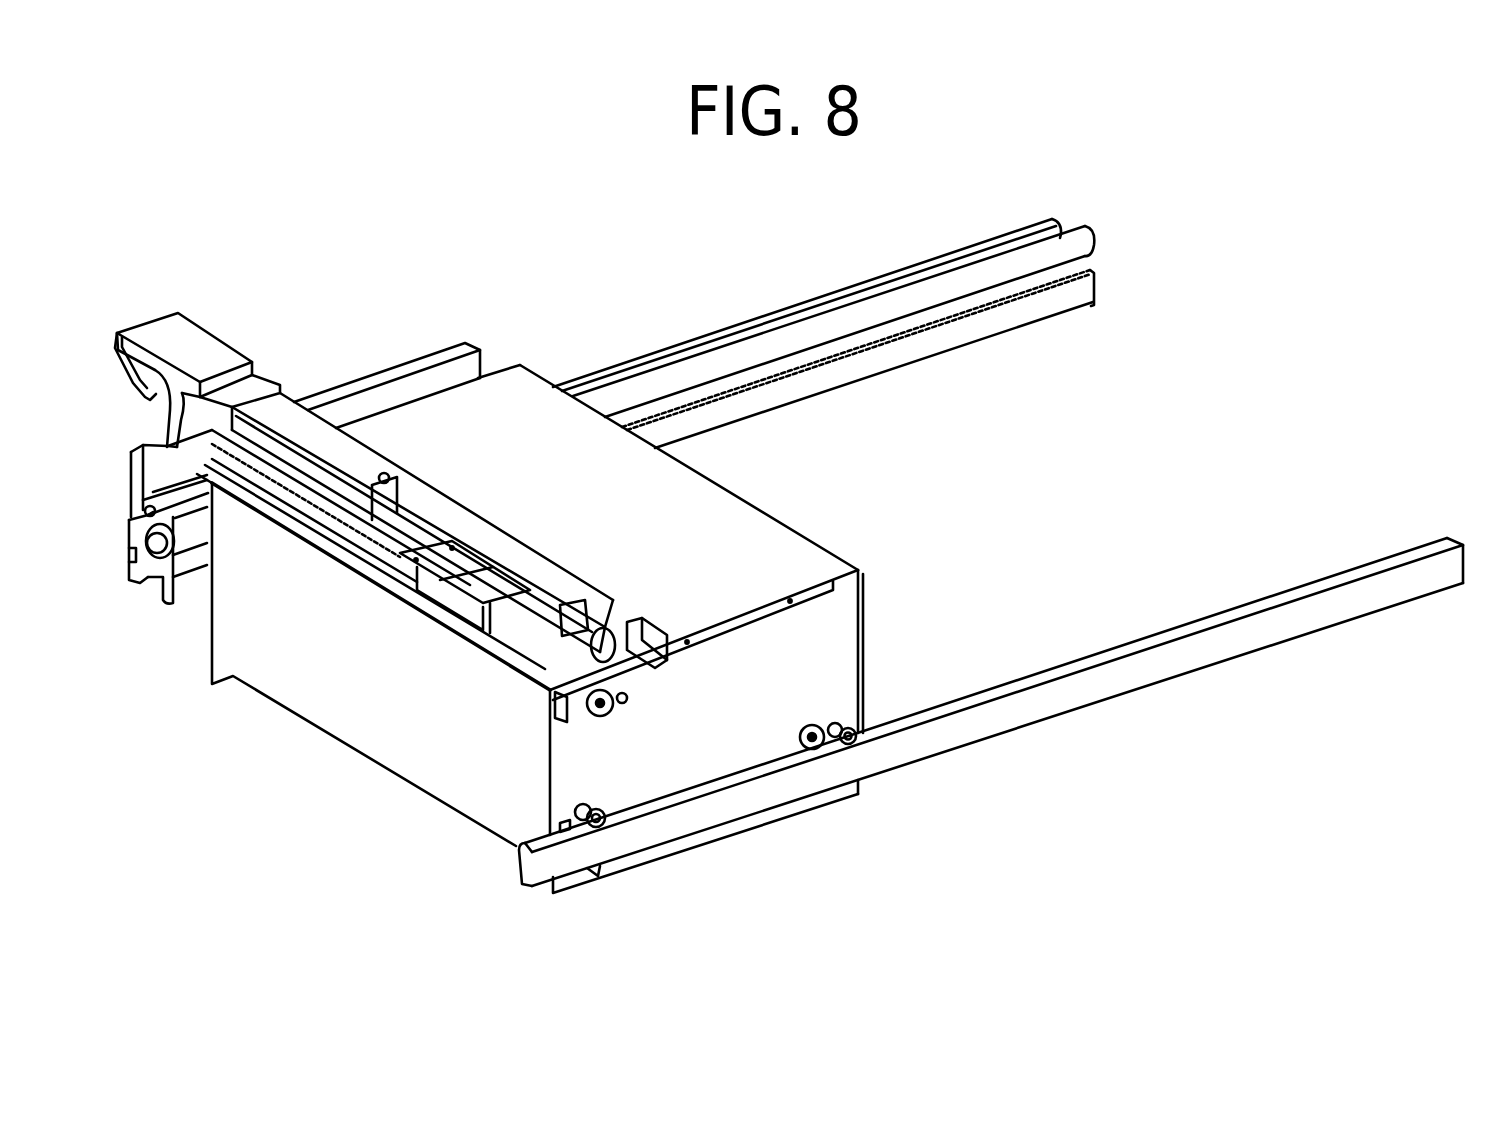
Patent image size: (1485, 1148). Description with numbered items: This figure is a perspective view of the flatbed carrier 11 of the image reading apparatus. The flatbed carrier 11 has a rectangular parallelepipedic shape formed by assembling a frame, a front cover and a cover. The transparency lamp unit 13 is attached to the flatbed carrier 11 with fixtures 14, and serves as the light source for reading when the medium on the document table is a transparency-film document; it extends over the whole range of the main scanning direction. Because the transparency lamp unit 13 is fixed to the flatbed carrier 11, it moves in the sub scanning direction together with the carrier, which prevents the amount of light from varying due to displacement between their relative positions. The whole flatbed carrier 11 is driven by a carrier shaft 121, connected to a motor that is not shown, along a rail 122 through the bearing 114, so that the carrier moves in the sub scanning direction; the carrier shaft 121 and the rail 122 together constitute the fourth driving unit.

The flatbed carrier 11 is at (330, 735).
The transparency lamp unit 13 is at (568, 568).
The fixtures 14 is at (150, 314).
The bearing 114 is at (847, 724).
The carrier shaft 121 is at (1085, 235).
The rail 122 is at (1093, 280).